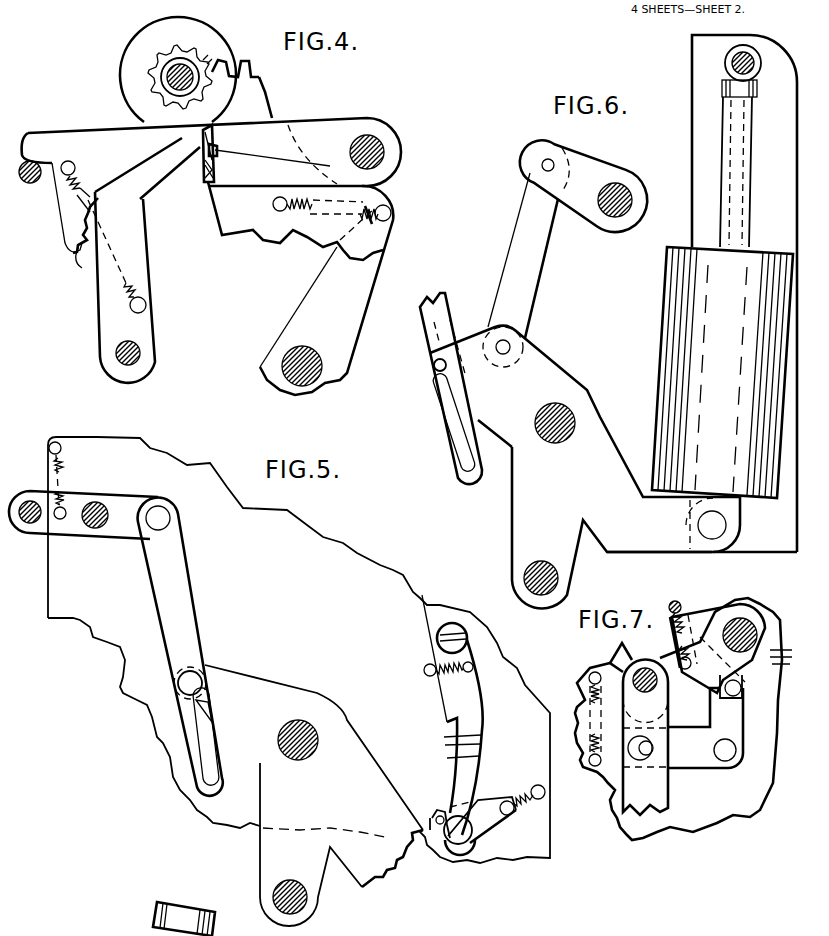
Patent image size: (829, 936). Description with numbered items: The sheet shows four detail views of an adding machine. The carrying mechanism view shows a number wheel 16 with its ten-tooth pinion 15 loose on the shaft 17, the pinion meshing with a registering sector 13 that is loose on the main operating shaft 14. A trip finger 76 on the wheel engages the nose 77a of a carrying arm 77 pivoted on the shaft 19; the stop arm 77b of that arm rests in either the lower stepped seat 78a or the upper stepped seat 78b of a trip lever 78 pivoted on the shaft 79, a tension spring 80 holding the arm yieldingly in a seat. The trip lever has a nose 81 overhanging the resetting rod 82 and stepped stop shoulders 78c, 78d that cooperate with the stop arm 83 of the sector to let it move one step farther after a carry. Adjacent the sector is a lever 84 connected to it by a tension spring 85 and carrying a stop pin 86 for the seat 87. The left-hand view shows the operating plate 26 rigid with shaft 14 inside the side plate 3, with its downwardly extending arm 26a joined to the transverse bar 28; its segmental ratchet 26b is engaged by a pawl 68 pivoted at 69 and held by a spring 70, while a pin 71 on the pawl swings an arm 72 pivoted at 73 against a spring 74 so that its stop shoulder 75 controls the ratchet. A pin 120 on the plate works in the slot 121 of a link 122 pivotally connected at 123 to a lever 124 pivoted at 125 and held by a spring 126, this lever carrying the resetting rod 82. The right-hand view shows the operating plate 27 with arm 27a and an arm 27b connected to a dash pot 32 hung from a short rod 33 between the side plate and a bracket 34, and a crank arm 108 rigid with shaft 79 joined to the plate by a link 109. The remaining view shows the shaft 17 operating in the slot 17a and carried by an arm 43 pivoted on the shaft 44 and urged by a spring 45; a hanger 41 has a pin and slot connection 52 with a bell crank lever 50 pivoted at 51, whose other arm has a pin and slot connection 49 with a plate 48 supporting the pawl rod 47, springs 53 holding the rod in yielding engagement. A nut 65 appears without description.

In FIG. 5, the side plate 3 is at (383, 582).
In FIG. 4, the registering sector 13 is at (256, 100).
In FIG. 4, the main operating shaft 14 is at (325, 368).
In FIG. 6, the main operating shaft 14 is at (560, 405).
In FIG. 5, the main operating shaft 14 is at (285, 750).
In FIG. 4, the pinion 15 is at (198, 45).
In FIG. 4, the number wheel 16 is at (183, 26).
In FIG. 4, the shaft 17 is at (166, 77).
In FIG. 7, the shaft 17 is at (612, 655).
In FIG. 7, the slot 17a is at (619, 650).
In FIG. 4, the shaft 19 is at (142, 355).
In FIG. 5, the operating plate 26 is at (350, 748).
In FIG. 5, the downwardly extending arm 26a is at (275, 865).
In FIG. 5, the segmental ratchet 26b is at (400, 868).
In FIG. 6, the operating plate 27 is at (592, 437).
In FIG. 6, the downwardly extending arm 27a is at (522, 505).
In FIG. 6, the arm 27b is at (663, 535).
In FIG. 6, the transverse bar 28 is at (560, 578).
In FIG. 5, the transverse bar 28 is at (305, 908).
In FIG. 6, the dash pot 32 is at (715, 367).
In FIG. 6, the short rod 33 is at (732, 63).
In FIG. 6, the bracket 34 is at (705, 127).
In FIG. 7, the hanger 41 is at (648, 795).
In FIG. 7, the arm 43 is at (660, 658).
In FIG. 7, the shaft 44 is at (742, 618).
In FIG. 7, the spring 45 is at (593, 702).
In FIG. 7, the rod 47 is at (675, 600).
In FIG. 7, the plate 48 is at (693, 625).
In FIG. 7, the pin and slot connection 49 is at (740, 686).
In FIG. 7, the bell crank lever 50 is at (745, 710).
In FIG. 7, the pivot 51 is at (723, 757).
In FIG. 7, the pin and slot connection 52 is at (637, 752).
In FIG. 7, the spring 53 is at (684, 621).
In FIG. 5, the nut 65 is at (250, 919).
In FIG. 5, the pawl 68 is at (492, 830).
In FIG. 5, the pivot 69 is at (465, 835).
In FIG. 5, the spring 70 is at (530, 807).
In FIG. 5, the pin 71 is at (450, 842).
In FIG. 5, the arm 72 is at (456, 716).
In FIG. 5, the pivot 73 is at (456, 626).
In FIG. 5, the spring 74 is at (430, 639).
In FIG. 5, the stop shoulder 75 is at (472, 670).
In FIG. 4, the trip finger 76 is at (210, 68).
In FIG. 4, the carrying arm 77 is at (137, 203).
In FIG. 4, the nose 77a is at (200, 172).
In FIG. 4, the stop arm 77b is at (75, 220).
In FIG. 4, the trip lever 78 is at (338, 126).
In FIG. 4, the lower stepped seat 78a is at (85, 254).
In FIG. 4, the upper stepped seat 78b is at (88, 175).
In FIG. 4, the forward stop shoulder 78c is at (212, 186).
In FIG. 4, the upper stop shoulder 78d is at (220, 153).
In FIG. 4, the shaft 79 is at (372, 138).
In FIG. 6, the shaft 79 is at (630, 186).
In FIG. 4, the tension spring 80 is at (147, 300).
In FIG. 4, the nose 81 is at (40, 147).
In FIG. 4, the resetting rod 82 is at (31, 185).
In FIG. 5, the resetting rod 82 is at (32, 525).
In FIG. 4, the stop arm 83 is at (207, 180).
In FIG. 4, the lever 84 is at (372, 283).
In FIG. 4, the tension spring 85 is at (364, 220).
In FIG. 4, the stop pin 86 is at (392, 214).
In FIG. 4, the seat 87 is at (372, 222).
In FIG. 6, the crank arm 108 is at (580, 167).
In FIG. 6, the link 109 is at (532, 262).
In FIG. 6, the pin 120 is at (436, 371).
In FIG. 5, the pin 120 is at (180, 689).
In FIG. 6, the slot 121 is at (456, 432).
In FIG. 5, the slot 121 is at (207, 758).
In FIG. 6, the link 122 is at (428, 323).
In FIG. 5, the link 122 is at (150, 594).
In FIG. 5, the pivotal connection 123 is at (165, 512).
In FIG. 5, the lever 124 is at (128, 500).
In FIG. 5, the pivot 125 is at (112, 505).
In FIG. 5, the spring 126 is at (64, 455).